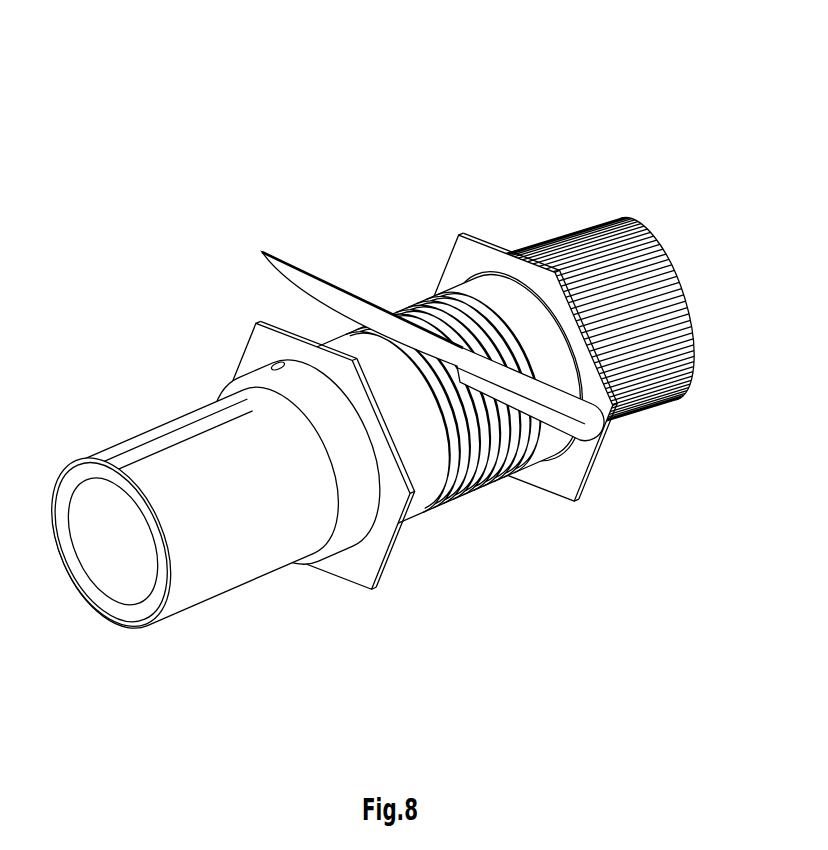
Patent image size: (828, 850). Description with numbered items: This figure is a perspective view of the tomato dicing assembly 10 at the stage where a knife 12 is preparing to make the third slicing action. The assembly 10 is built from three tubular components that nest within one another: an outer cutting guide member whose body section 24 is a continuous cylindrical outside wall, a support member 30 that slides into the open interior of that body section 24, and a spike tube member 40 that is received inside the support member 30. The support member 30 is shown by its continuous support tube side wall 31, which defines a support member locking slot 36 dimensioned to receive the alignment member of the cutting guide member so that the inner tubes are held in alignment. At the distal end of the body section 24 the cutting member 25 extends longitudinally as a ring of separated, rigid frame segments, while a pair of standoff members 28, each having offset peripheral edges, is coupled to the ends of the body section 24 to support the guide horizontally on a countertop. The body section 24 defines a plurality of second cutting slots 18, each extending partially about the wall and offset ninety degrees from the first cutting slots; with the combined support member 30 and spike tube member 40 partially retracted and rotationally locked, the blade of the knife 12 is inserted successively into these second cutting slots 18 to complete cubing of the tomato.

The tomato dicing assembly 10 is at (217, 104).
The knife 12 is at (308, 289).
The second cutting slots 18 is at (419, 312).
The body section 24 is at (442, 401).
The cutting member 25 is at (540, 209).
The standoff members 28 is at (418, 437).
The support member 30 is at (208, 560).
The support tube side wall 31 is at (262, 533).
The support member locking slot 36 is at (176, 423).
The spike tube member 40 is at (111, 548).